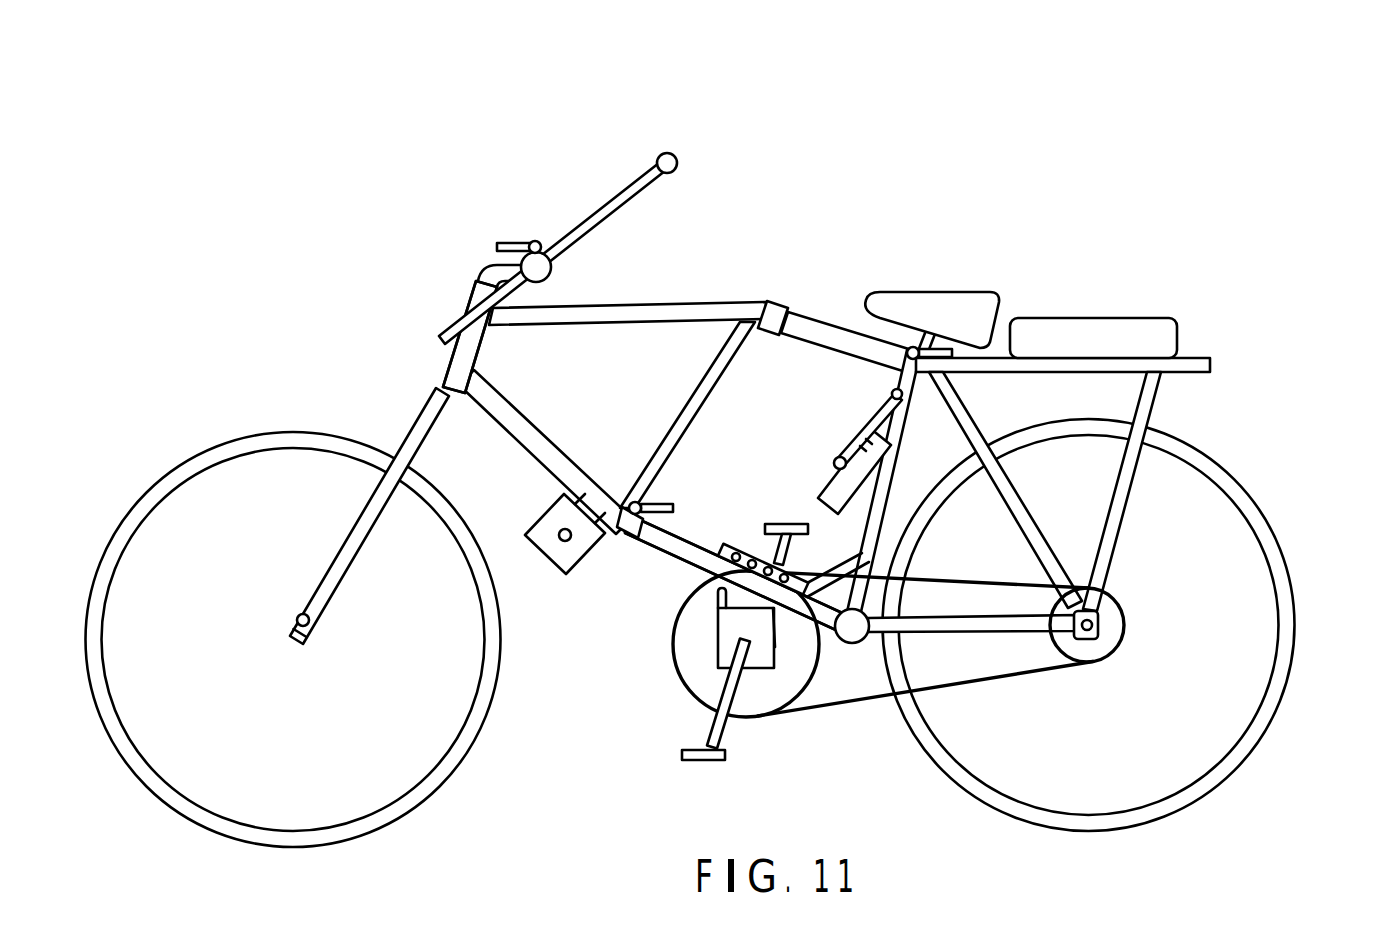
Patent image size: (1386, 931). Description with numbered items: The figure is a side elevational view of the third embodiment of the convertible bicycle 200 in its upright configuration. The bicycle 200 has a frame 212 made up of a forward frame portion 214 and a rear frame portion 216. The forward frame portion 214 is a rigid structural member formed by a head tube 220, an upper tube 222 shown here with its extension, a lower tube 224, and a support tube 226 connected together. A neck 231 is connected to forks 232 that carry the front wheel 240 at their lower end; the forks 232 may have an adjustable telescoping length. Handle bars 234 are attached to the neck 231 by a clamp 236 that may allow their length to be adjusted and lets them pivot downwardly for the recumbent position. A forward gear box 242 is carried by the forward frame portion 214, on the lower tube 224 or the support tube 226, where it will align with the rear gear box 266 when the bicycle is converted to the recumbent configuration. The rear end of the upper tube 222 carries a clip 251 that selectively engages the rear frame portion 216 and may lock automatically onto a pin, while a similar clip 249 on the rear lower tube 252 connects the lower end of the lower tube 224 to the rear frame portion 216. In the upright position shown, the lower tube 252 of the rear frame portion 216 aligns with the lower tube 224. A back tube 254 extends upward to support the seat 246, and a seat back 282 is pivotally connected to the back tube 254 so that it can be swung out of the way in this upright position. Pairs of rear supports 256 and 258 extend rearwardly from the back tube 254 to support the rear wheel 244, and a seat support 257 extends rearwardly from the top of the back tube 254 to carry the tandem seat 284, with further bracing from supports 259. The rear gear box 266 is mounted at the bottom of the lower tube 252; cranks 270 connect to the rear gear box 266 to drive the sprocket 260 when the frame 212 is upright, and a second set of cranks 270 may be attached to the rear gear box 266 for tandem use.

The bicycle 200 is at (732, 445).
The frame 212 is at (675, 292).
The forward frame portion 214 is at (423, 393).
The rear frame portion 216 is at (667, 566).
The head tube 220 is at (450, 359).
The upper tube 222 is at (640, 305).
The lower tube 224 is at (518, 396).
The support tube 226 is at (697, 376).
The neck 231 is at (478, 280).
The forks 232 is at (423, 432).
The handle bars 234 is at (669, 152).
The clamp 236 is at (510, 242).
The front wheel 240 is at (496, 676).
The forward gear box 242 is at (570, 574).
The rear wheel 244 is at (1238, 774).
The seat 246 is at (945, 292).
The clip 249 is at (641, 502).
The clip 251 is at (900, 350).
The lower tube 252 is at (676, 533).
The back tube 254 is at (900, 427).
The rear supports 256 is at (1007, 482).
The seat support 257 is at (1197, 358).
The rear supports 258 is at (962, 684).
The supports 259 is at (1123, 522).
The drive sprocket 260 is at (690, 638).
The rear gear box 266 is at (738, 637).
The cranks 270 is at (722, 728).
The seat back 282 is at (826, 496).
The tandem seat 284 is at (1107, 318).